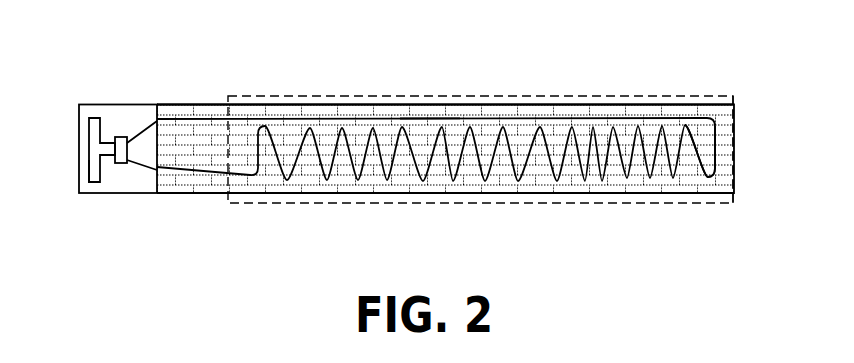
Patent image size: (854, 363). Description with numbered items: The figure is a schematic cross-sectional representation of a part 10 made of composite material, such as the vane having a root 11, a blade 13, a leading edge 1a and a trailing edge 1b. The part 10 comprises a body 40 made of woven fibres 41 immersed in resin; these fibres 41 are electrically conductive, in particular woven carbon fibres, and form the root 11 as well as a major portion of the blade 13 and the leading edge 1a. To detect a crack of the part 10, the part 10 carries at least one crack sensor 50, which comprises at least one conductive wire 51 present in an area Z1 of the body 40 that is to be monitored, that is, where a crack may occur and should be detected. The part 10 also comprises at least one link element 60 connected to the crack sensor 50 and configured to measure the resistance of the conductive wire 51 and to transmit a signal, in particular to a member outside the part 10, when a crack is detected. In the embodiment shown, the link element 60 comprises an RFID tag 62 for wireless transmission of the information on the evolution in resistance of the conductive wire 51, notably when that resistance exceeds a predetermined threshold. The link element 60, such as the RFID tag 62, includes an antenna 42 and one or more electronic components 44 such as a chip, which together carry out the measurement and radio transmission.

The part 10 is at (348, 97).
The root 11 is at (126, 206).
The blade 13 is at (505, 203).
The leading edge 1a is at (467, 102).
The trailing edge 1b is at (400, 194).
The body 40 is at (628, 128).
The woven fibres 41 is at (650, 173).
The antenna 42 is at (89, 145).
The electronic components 44 is at (90, 174).
The crack sensor 50 is at (235, 114).
The conductive wire 51 is at (433, 103).
The link element 60 is at (115, 113).
The RFID tag 62 is at (107, 113).
The area Z1 is at (727, 95).